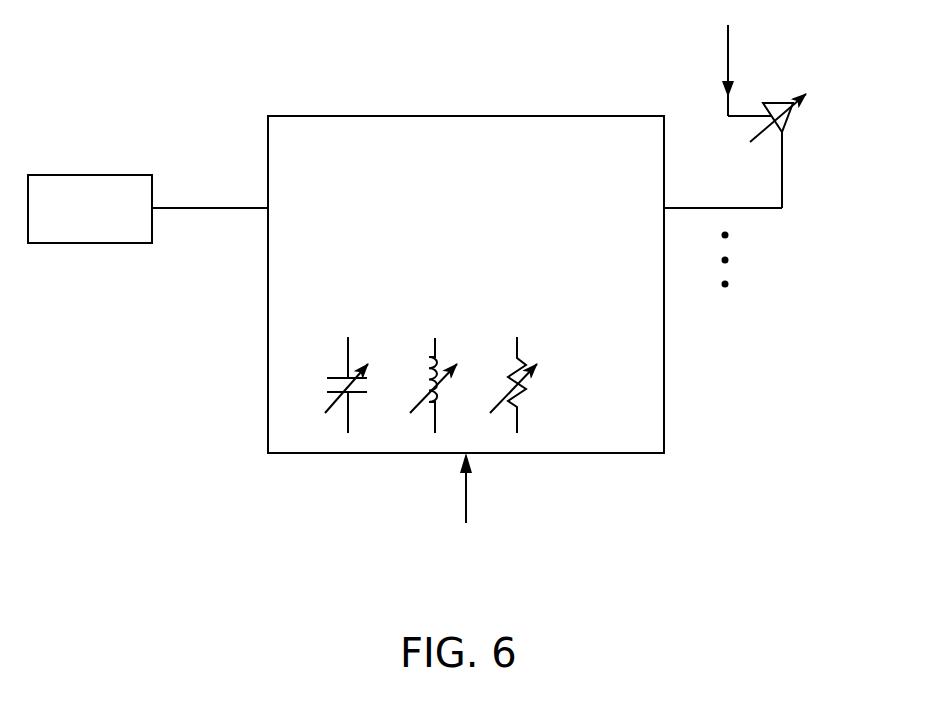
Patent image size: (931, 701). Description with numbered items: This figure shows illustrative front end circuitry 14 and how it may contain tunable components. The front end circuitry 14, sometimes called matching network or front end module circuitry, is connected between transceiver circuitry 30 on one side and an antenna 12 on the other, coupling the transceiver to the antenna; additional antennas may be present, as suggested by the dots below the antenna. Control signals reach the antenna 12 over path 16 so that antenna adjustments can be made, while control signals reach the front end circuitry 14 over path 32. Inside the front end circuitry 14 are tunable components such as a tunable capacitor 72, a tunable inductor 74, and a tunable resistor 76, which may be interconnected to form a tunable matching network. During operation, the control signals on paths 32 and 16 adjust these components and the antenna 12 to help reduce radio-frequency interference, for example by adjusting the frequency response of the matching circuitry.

The antenna 12 is at (790, 118).
The front end circuitry 14 is at (548, 116).
The path 16 is at (730, 52).
The transceiver circuitry 30 is at (97, 175).
The path 32 is at (468, 490).
The tunable capacitor 72 is at (380, 336).
The tunable inductor 74 is at (463, 336).
The tunable resistor 76 is at (549, 336).